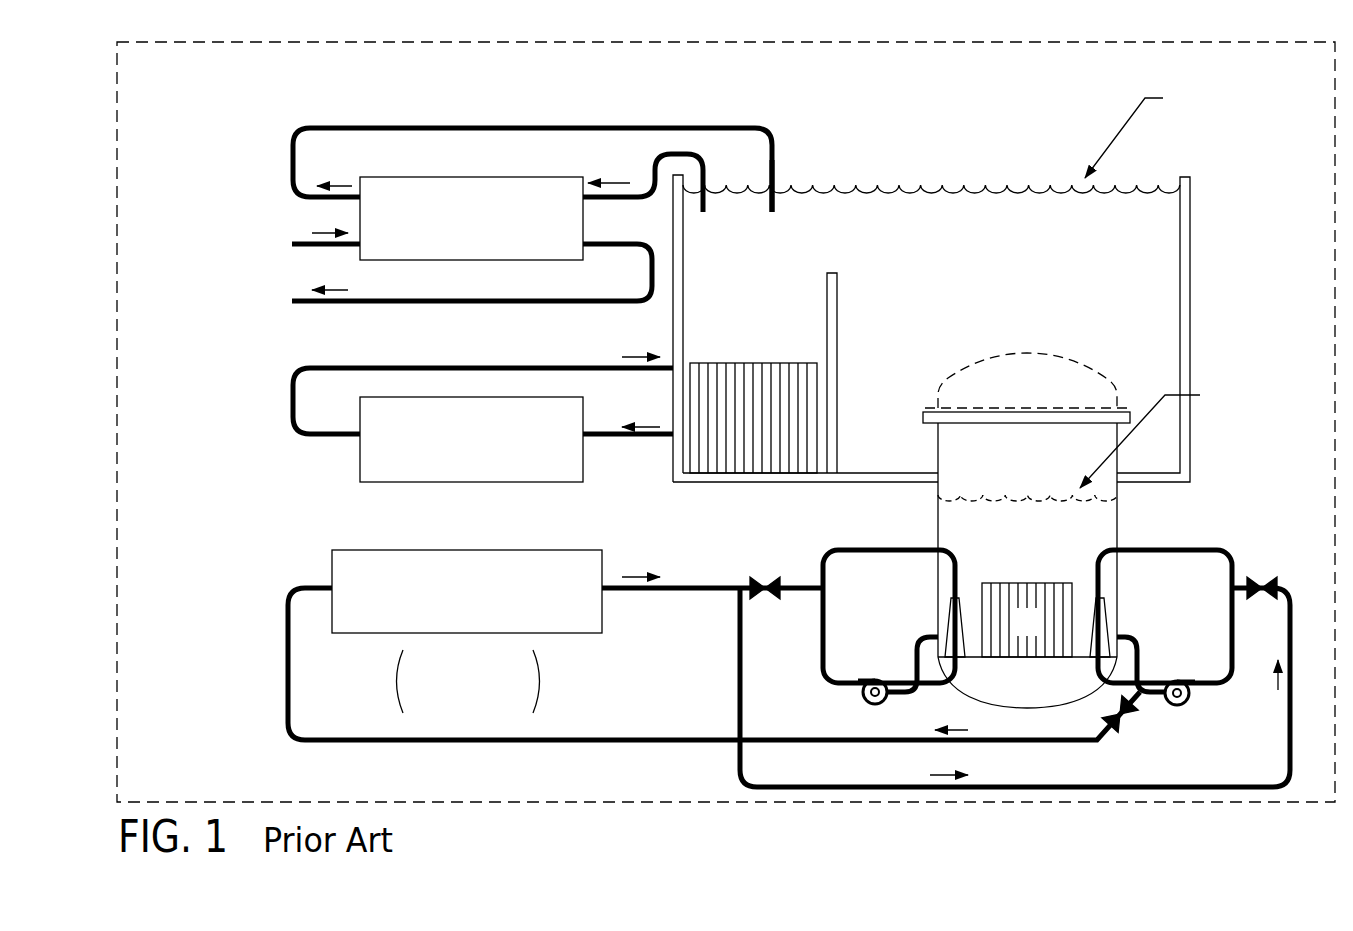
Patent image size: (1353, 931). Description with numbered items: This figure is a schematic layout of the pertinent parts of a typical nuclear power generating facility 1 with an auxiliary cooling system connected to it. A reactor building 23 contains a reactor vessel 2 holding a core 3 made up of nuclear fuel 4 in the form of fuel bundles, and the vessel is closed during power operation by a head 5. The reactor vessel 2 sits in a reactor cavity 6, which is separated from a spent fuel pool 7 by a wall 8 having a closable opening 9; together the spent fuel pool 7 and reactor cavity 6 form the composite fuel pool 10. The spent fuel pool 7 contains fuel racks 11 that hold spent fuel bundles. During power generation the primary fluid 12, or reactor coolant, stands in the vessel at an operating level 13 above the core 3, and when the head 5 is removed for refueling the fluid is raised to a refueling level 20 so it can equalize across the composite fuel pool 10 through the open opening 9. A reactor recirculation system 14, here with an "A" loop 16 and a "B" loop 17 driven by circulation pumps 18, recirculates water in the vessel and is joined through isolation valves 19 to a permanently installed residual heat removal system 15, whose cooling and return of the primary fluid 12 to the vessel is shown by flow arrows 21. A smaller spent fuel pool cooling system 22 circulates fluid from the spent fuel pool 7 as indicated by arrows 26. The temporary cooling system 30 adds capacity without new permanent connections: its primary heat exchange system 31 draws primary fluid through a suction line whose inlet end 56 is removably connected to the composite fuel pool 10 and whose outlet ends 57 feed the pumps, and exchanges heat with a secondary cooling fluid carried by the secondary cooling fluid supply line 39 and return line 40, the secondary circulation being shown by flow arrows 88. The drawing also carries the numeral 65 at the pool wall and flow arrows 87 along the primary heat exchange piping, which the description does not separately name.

The nuclear power generating facility 1 is at (612, 112).
The reactor vessel 2 is at (1125, 530).
The core 3 is at (1060, 573).
The nuclear fuel 4 is at (1019, 633).
The head 5 is at (1062, 353).
The reactor cavity 6 is at (1020, 337).
The spent fuel pool 7 is at (744, 331).
The wall 8 is at (840, 325).
The closable opening 9 is at (832, 258).
The composite fuel pool 10 is at (910, 165).
The fuel racks 11 is at (818, 398).
The primary fluid 12 is at (914, 266).
The operating level 13 is at (967, 485).
The reactor recirculation system 14 is at (1010, 665).
The residual heat removal system 15 is at (288, 578).
The "A" loop 16 is at (1210, 695).
The "B" loop 17 is at (817, 655).
The circulation pumps 18 is at (873, 705).
The valves 19 is at (752, 578).
The refueling level 20 is at (990, 177).
The flow arrows 21 is at (622, 576).
The spent fuel pool cooling system 22 is at (345, 462).
The reactor building 23 is at (822, 81).
The arrows 26 is at (628, 356).
The temporary cooling system 30 is at (272, 158).
The primary heat exchange system 31 is at (368, 118).
The secondary cooling fluid supply line 39 is at (352, 240).
The secondary cooling fluid return line 40 is at (492, 305).
The inlet end of primary fluid pump suction line 56 is at (712, 208).
The outlet ends of primary fluid pump suction line 57 is at (775, 210).
The pool wall 65 is at (686, 240).
The primary flow direction arrows 87 is at (352, 185).
The flow arrows 88 is at (340, 232).